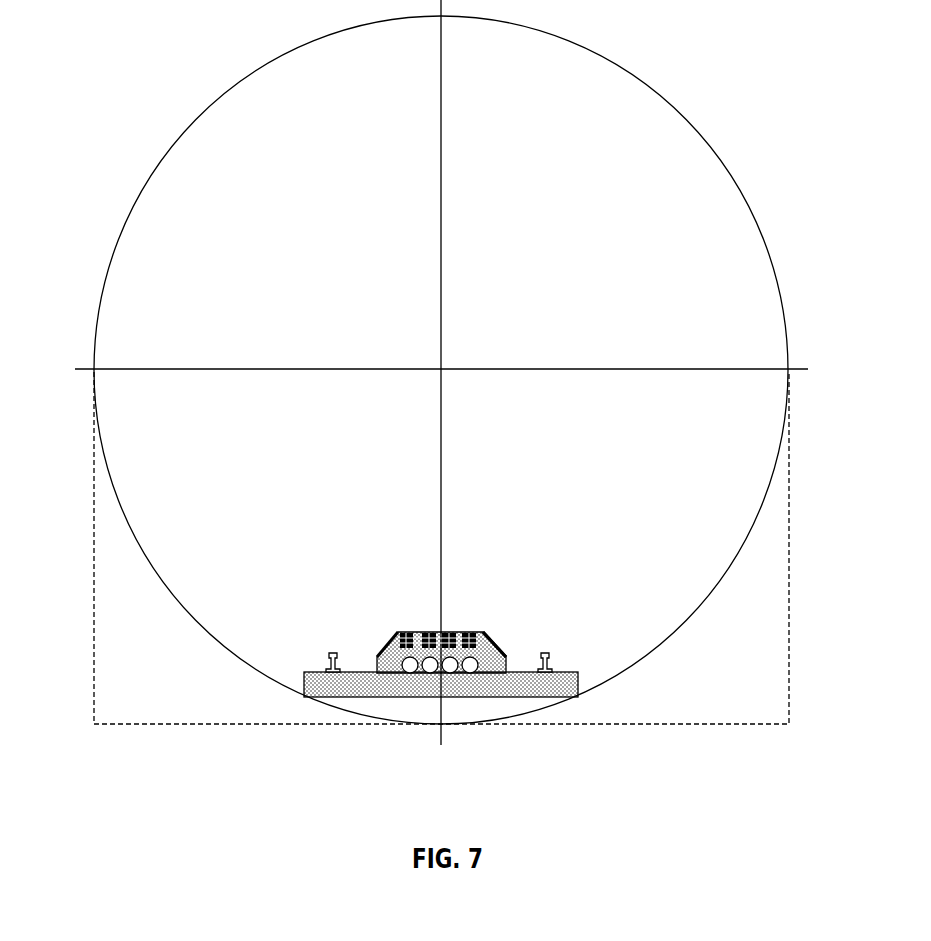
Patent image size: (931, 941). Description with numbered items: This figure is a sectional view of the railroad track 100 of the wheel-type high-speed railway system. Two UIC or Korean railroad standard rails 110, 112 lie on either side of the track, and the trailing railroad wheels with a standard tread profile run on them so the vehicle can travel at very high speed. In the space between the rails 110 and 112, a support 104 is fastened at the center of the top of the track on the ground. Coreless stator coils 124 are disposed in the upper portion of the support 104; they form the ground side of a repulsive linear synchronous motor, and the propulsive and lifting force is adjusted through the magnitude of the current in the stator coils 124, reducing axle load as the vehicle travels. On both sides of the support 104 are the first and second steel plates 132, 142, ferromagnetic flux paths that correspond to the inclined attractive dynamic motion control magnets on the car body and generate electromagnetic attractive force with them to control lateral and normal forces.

The railroad track 100 is at (282, 687).
The rail 110 is at (326, 655).
The rail 112 is at (551, 657).
The first steel plate 132 is at (393, 641).
The support 104 is at (428, 634).
The coreless stator coils 124 is at (453, 634).
The second steel plate 142 is at (494, 636).